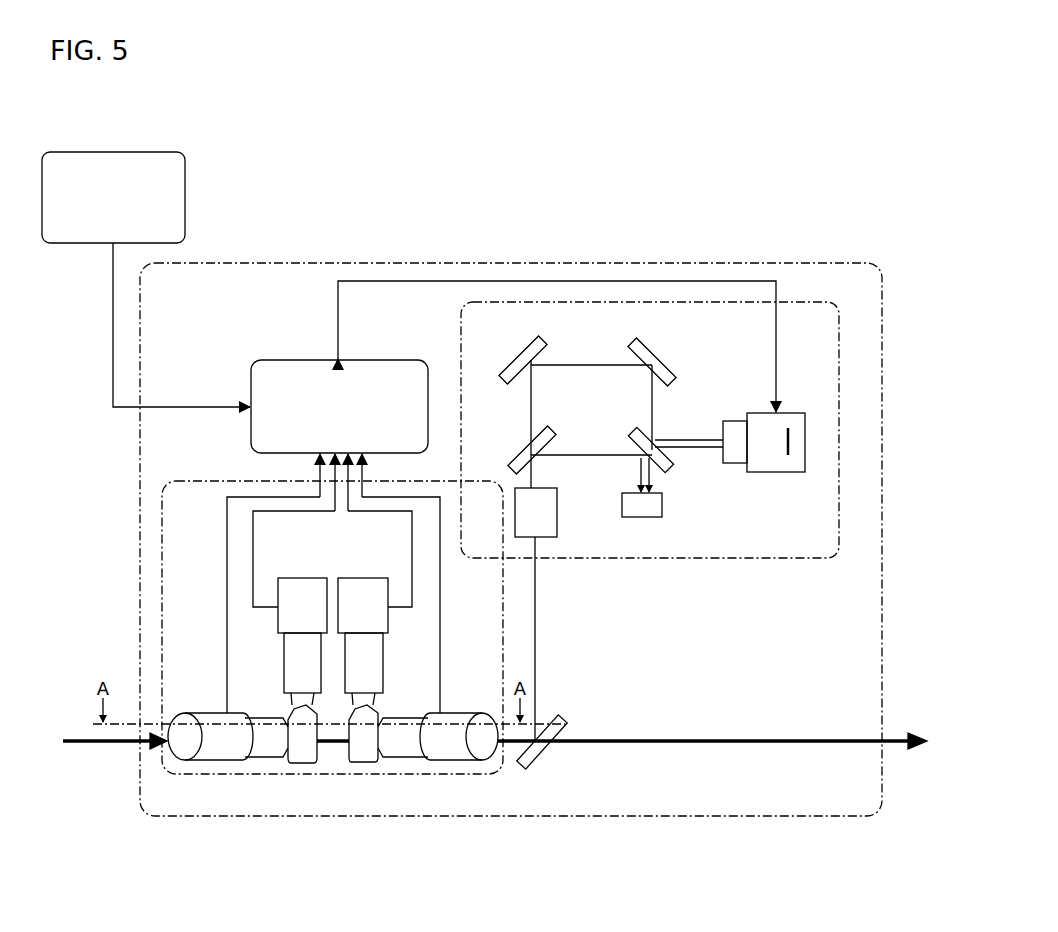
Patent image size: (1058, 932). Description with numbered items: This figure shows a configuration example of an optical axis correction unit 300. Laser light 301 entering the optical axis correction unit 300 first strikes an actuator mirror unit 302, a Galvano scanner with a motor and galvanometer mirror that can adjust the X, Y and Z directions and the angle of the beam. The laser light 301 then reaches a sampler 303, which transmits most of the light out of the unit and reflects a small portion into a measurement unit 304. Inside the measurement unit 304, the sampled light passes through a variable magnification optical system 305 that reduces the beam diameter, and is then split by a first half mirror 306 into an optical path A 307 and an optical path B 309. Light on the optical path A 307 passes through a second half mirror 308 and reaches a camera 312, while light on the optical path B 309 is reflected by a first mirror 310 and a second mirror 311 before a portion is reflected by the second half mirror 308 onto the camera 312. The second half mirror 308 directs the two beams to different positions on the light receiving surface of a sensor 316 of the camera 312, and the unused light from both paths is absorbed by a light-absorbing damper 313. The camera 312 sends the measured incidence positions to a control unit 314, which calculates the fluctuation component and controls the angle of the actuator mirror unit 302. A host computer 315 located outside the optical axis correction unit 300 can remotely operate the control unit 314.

The optical axis correction unit 300 is at (553, 263).
The laser light 301 is at (80, 733).
The actuator mirror unit 302 is at (412, 776).
The sampler 303 is at (545, 763).
The measurement unit 304 is at (755, 558).
The variable magnification optical system 305 is at (558, 522).
The first half mirror 306 is at (525, 448).
The optical path A 307 is at (585, 455).
The second half mirror 308 is at (669, 467).
The optical path B 309 is at (583, 365).
The first mirror 310 is at (518, 362).
The second mirror 311 is at (663, 360).
The camera 312 is at (788, 412).
The light-absorbing damper 313 is at (664, 512).
The control unit 314 is at (298, 360).
The host computer 315 is at (112, 150).
The sensor 316 is at (790, 460).